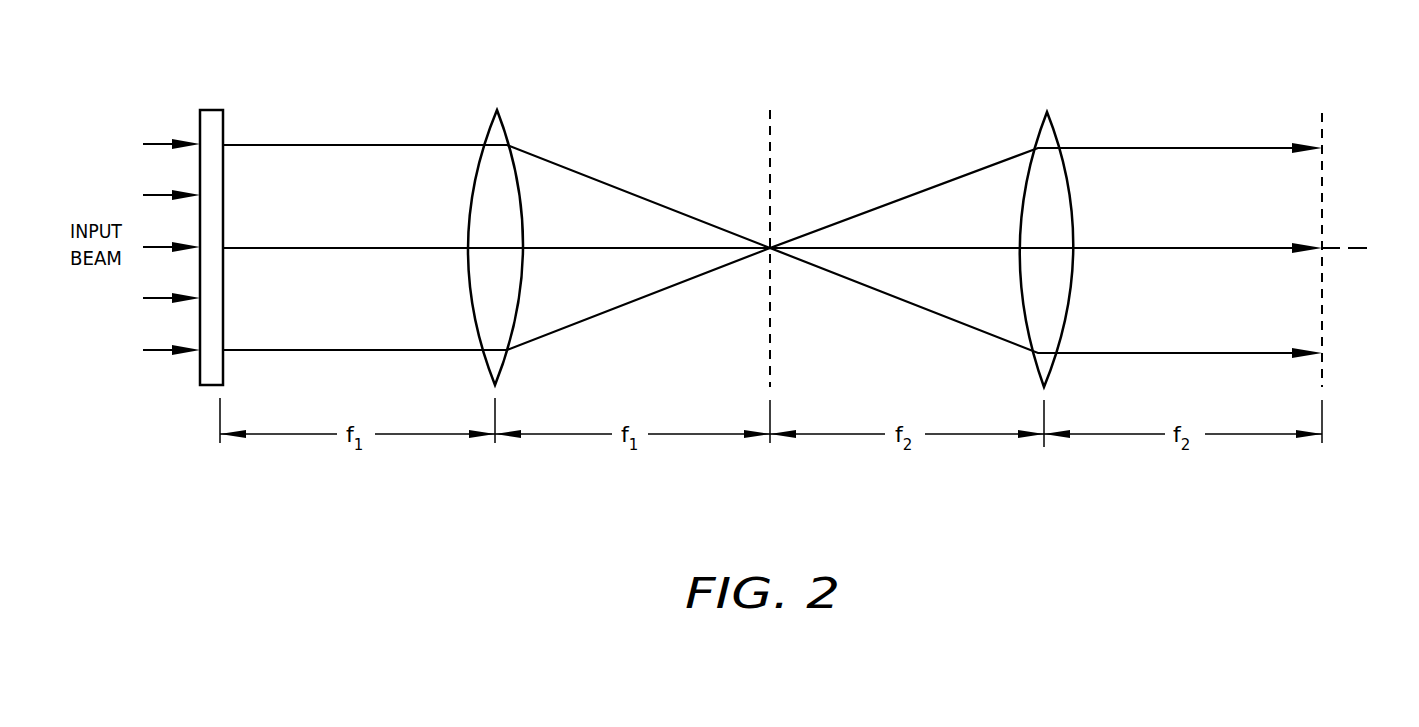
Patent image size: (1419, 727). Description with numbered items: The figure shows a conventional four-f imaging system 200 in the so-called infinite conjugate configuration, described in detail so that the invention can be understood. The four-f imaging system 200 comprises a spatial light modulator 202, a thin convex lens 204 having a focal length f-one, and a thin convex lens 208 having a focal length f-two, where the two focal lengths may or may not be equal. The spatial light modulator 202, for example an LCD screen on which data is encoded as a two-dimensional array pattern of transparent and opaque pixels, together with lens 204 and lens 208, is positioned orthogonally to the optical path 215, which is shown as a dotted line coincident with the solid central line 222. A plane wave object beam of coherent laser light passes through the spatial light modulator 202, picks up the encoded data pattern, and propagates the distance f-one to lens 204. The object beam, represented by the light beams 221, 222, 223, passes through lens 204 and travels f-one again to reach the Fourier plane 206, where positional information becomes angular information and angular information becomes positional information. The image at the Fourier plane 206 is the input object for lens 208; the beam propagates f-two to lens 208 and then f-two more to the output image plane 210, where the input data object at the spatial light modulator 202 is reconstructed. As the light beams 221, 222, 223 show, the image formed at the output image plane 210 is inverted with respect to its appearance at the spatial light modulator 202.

The 4-f imaging system 200 is at (358, 532).
The spatial light modulator 202 is at (224, 118).
The thin convex lens 204 is at (508, 133).
The Fourier plane 206 is at (770, 172).
The thin convex lens 208 is at (1035, 140).
The output image plane 210 is at (1325, 197).
The optical path 215 is at (1350, 252).
The light beam 221 is at (365, 143).
The light beam 222 is at (365, 246).
The light beam 223 is at (365, 348).